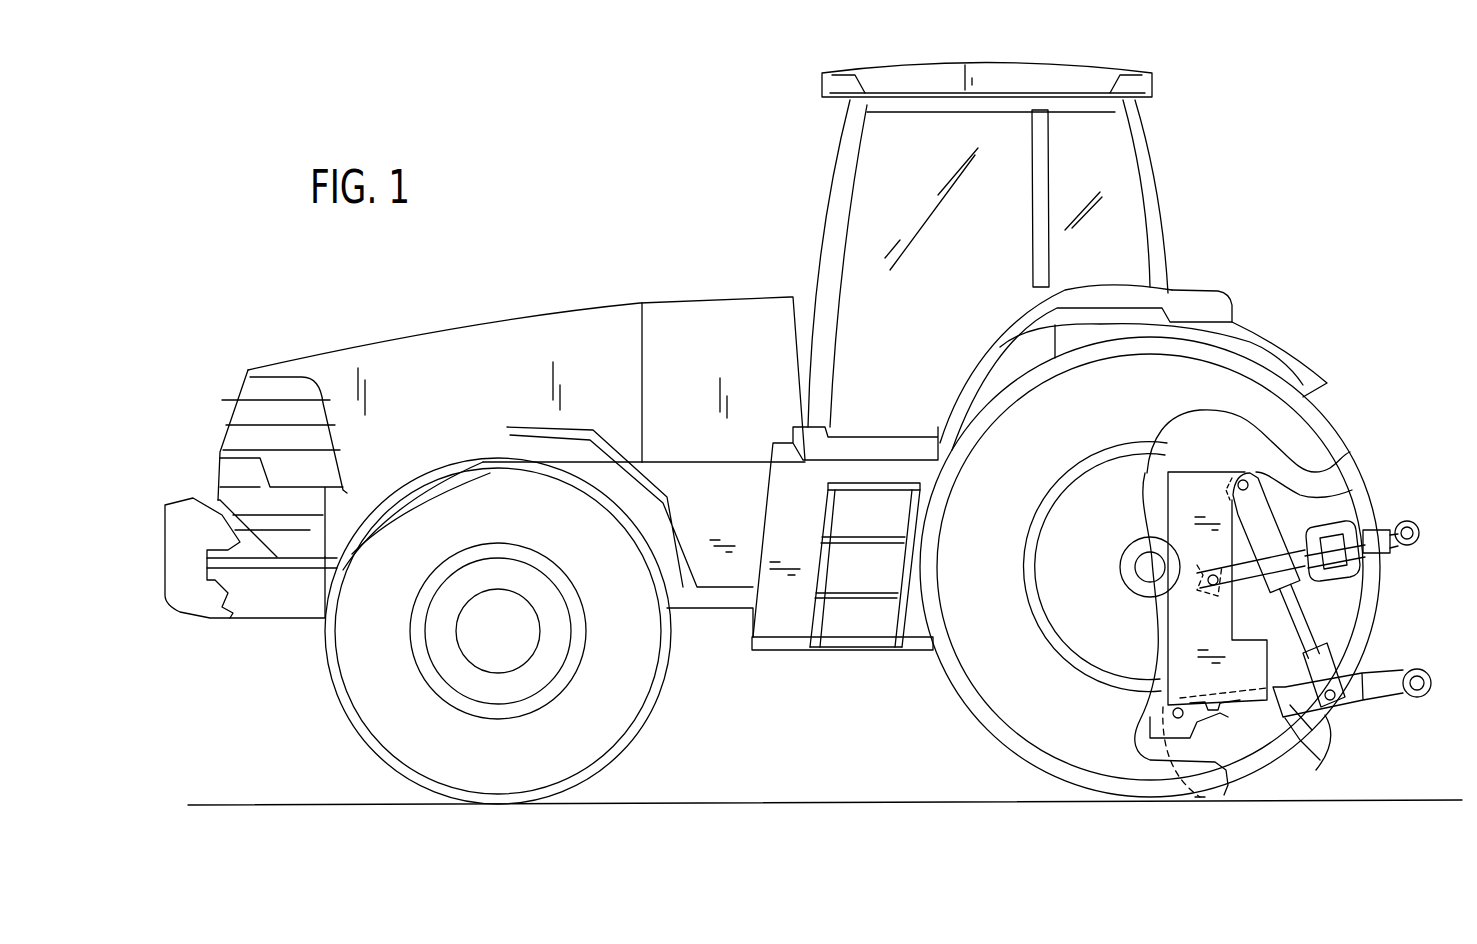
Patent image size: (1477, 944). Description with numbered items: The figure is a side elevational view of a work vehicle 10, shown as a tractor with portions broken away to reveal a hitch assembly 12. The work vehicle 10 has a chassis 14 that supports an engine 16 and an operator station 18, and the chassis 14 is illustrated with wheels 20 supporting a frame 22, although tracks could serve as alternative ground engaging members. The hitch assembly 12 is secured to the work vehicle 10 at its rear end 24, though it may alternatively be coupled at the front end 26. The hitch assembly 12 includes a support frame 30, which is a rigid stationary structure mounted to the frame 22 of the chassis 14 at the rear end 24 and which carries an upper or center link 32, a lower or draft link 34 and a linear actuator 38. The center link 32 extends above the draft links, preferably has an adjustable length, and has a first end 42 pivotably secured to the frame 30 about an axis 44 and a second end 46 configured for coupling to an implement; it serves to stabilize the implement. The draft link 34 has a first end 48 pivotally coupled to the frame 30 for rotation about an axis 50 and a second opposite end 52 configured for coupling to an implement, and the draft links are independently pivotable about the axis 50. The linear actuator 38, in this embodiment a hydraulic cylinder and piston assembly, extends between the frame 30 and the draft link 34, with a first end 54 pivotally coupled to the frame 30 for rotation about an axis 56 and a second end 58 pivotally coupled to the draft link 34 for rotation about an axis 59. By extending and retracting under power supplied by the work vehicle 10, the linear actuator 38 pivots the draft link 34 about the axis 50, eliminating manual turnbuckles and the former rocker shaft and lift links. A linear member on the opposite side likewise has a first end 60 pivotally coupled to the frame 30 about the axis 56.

The work vehicle 10 is at (596, 141).
The hitch assembly 12 is at (1381, 503).
The chassis 14 is at (258, 620).
The engine 16 is at (495, 345).
The operator station 18 is at (917, 74).
The wheels 20 is at (404, 735).
The frame 22 is at (295, 624).
The rear end 24 is at (1258, 186).
The front end 26 is at (198, 382).
The frame 30 is at (1190, 478).
The center link 32 is at (1420, 527).
The draft link 34 is at (1420, 664).
The linear actuator 38 is at (1306, 615).
The first end 42 is at (1210, 565).
The axis 44 is at (1212, 586).
The second end 46 is at (1395, 520).
The first end 48 is at (1200, 790).
The axis 50 is at (1170, 705).
The second end 52 is at (1424, 698).
The first end 54 is at (1263, 470).
The axis 56 is at (1240, 481).
The second end 58 is at (1308, 720).
The axis 59 is at (1333, 702).
The first end 60 is at (1300, 723).